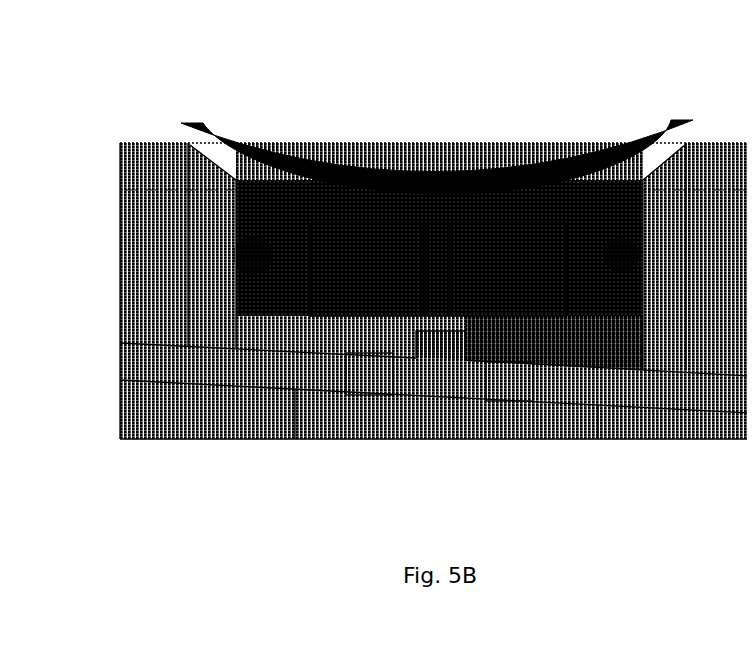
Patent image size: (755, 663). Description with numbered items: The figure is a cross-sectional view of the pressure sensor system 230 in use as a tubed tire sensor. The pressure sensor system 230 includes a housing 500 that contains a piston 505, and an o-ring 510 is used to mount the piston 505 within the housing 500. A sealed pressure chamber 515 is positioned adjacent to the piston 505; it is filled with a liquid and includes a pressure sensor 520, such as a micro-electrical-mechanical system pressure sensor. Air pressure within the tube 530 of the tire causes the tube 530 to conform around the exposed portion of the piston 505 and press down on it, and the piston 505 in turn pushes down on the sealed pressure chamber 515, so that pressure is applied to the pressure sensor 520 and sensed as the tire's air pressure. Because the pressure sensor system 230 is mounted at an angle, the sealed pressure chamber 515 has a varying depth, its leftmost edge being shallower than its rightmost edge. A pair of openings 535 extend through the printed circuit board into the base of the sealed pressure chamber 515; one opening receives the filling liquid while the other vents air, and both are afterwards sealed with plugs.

The pressure sensor system 230 is at (645, 117).
The housing 500 is at (197, 292).
The piston 505 is at (335, 308).
The o-ring 510 is at (633, 312).
The sealed pressure chamber 515 is at (562, 354).
The pressure sensor 520 is at (430, 323).
The tube 530 is at (212, 130).
The openings 535 is at (361, 372).